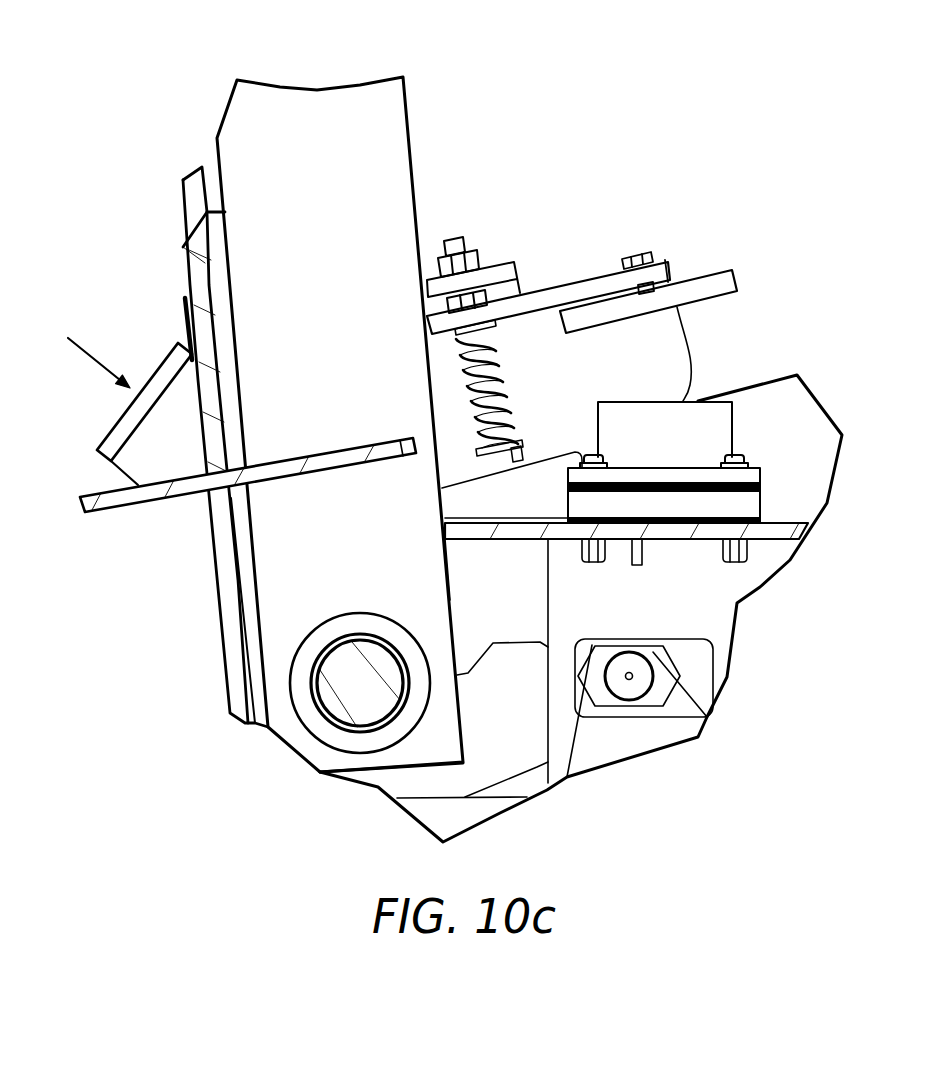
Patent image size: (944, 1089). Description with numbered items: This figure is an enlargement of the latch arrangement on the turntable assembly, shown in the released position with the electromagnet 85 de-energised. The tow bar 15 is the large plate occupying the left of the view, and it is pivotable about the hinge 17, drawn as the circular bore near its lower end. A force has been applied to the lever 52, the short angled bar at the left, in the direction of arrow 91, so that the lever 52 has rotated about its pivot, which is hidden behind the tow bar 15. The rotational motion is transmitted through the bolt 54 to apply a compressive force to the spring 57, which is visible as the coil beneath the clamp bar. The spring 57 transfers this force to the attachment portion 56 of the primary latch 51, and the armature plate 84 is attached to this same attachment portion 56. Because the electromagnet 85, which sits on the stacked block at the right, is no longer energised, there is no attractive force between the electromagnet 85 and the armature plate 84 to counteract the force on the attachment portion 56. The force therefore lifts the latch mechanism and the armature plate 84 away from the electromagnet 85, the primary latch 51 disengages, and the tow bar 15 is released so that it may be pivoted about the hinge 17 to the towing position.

The tow bar 15 is at (412, 163).
The hinge 17 is at (345, 640).
The primary latch 51 is at (688, 348).
The lever 52 is at (112, 433).
The bolt 54 is at (465, 238).
The attachment portion of primary latch 56 is at (665, 268).
The spring 57 is at (503, 392).
The armature plate 84 is at (735, 273).
The electromagnet 85 is at (638, 402).
The arrow 91 is at (93, 357).